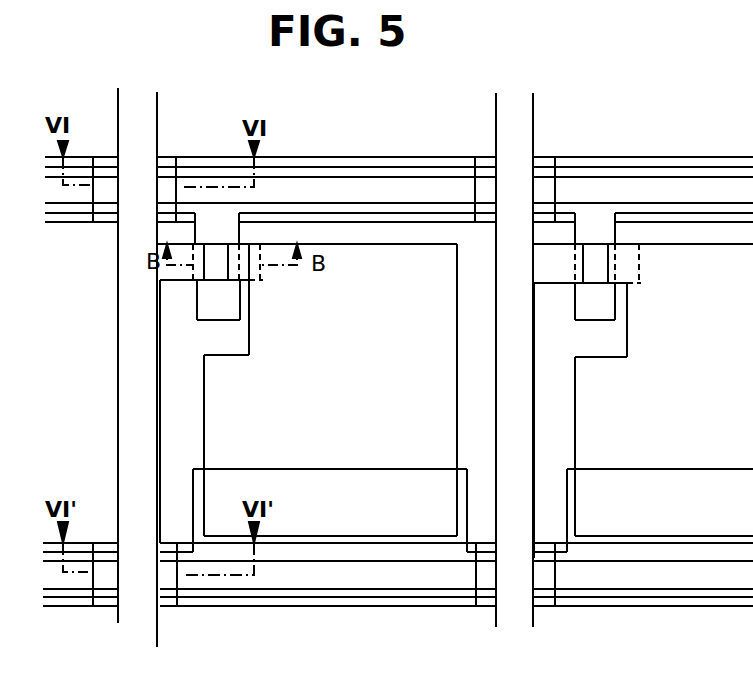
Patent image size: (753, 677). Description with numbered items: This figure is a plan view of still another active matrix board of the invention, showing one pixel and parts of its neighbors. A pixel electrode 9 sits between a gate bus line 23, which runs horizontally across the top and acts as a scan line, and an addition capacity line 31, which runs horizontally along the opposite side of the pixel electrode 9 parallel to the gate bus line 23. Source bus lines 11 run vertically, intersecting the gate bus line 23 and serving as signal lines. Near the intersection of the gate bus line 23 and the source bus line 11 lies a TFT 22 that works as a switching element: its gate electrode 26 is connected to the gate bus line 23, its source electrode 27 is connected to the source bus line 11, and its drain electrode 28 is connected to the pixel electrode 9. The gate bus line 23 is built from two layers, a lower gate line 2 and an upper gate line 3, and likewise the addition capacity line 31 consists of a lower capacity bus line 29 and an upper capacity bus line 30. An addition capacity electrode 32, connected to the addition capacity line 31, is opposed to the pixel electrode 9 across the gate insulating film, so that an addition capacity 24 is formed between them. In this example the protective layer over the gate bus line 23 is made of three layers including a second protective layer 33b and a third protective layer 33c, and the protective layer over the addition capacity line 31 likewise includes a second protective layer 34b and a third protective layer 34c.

The lower gate line 2 is at (398, 197).
The upper gate line 3 is at (413, 173).
The pixel electrode 9 is at (217, 433).
The source bus line 11 is at (137, 403).
The TFT 22 is at (193, 284).
The gate bus line 23 is at (433, 80).
The addition capacity 24 is at (375, 470).
The gate electrode 26 is at (225, 308).
The source electrode 27 is at (177, 281).
The drain electrode 28 is at (242, 277).
The lower capacity bus line 29 is at (408, 576).
The upper capacity bus line 30 is at (380, 590).
The addition capacity line 31 is at (433, 615).
The addition capacity electrode 32 is at (310, 469).
The second protective layer 33b is at (168, 157).
The third protective layer 33c is at (340, 157).
The second protective layer 34b is at (168, 604).
The third protective layer 34c is at (293, 603).